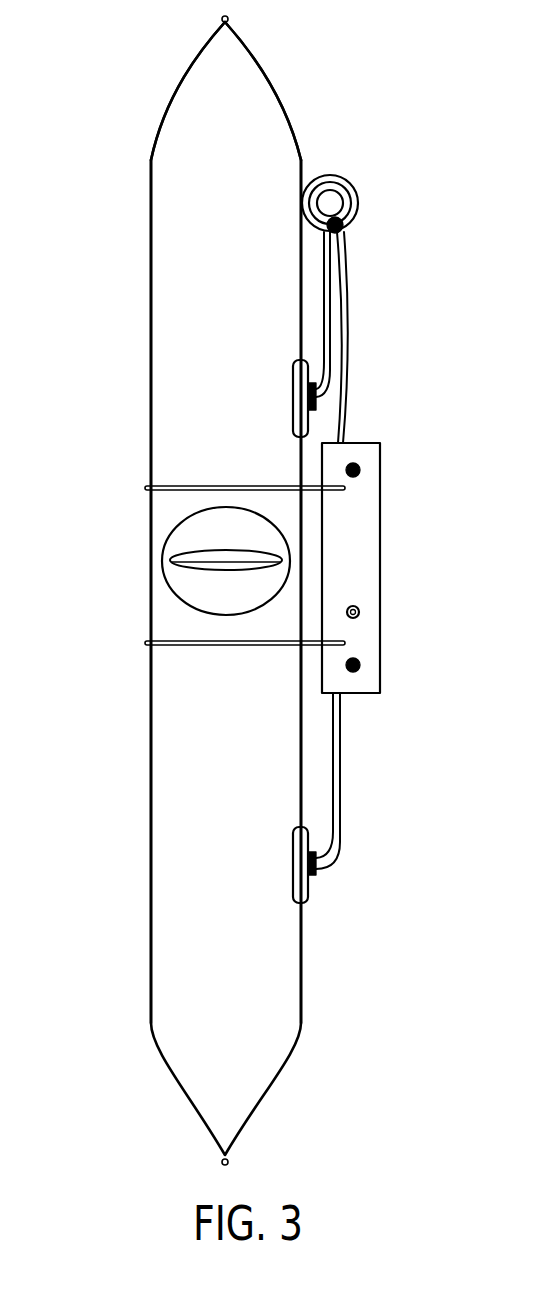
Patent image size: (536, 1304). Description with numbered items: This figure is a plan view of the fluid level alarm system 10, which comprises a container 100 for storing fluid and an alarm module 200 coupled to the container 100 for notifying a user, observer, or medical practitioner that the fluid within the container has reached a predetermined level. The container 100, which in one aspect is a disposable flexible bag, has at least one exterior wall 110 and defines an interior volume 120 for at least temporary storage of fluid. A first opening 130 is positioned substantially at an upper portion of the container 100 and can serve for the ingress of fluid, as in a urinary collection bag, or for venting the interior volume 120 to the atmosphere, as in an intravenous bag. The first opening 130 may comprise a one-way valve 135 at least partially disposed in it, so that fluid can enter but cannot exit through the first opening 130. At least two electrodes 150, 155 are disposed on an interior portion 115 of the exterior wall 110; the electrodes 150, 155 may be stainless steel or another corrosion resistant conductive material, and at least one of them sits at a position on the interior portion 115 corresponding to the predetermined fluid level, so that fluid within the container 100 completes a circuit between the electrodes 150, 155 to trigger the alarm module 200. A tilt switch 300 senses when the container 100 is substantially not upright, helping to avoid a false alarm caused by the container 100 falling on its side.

The fluid level alarm system 10 is at (84, 58).
The container 100 is at (278, 101).
The exterior wall 110 is at (302, 158).
The interior portion 115 is at (288, 127).
The interior volume 120 is at (225, 317).
The first opening 130 is at (202, 527).
The one-way valve 135 is at (212, 565).
The electrode 150 is at (300, 837).
The electrode 155 is at (302, 367).
The alarm module 200 is at (382, 548).
The tilt switch 300 is at (358, 192).